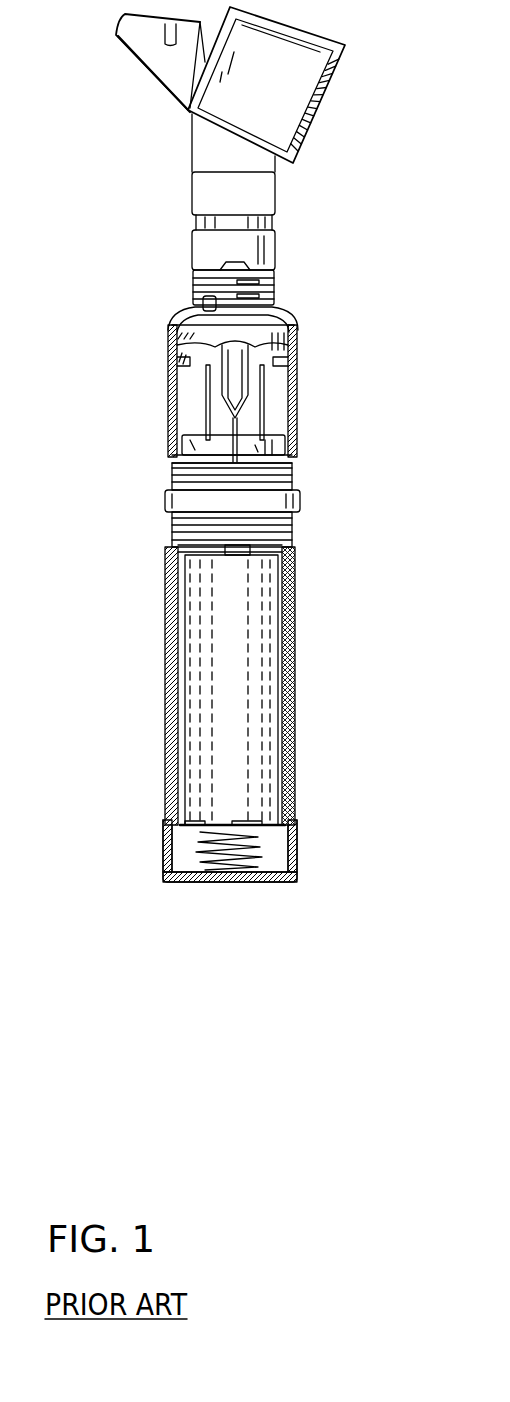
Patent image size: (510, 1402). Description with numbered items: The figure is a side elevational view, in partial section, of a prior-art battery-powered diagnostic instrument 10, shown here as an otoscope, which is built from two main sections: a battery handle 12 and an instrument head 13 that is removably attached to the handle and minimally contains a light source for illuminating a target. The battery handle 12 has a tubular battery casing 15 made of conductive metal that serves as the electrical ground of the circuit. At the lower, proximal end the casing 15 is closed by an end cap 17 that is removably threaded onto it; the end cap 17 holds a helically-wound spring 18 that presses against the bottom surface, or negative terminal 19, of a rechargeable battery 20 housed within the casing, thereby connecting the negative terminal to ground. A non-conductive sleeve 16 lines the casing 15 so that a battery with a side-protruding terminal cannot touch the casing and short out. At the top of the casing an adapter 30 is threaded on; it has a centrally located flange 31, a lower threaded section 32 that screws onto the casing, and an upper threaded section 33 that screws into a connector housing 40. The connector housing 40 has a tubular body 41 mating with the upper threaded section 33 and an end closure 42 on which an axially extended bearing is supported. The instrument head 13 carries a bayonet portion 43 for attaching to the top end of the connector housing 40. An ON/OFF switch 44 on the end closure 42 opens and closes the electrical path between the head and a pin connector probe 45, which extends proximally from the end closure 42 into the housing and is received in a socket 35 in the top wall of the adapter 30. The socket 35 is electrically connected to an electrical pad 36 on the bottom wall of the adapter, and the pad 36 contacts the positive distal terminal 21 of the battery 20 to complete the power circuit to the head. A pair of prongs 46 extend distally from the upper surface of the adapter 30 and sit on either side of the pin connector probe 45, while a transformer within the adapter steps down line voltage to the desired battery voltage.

The diagnostic instrument 10 is at (217, 277).
The battery handle 12 is at (214, 713).
The instrument head 13 is at (181, 193).
The tubular battery casing 15 is at (166, 708).
The non-conductive sleeve 16 is at (295, 689).
The end cap 17 is at (295, 858).
The helically-wound spring 18 is at (200, 848).
The negative terminal 19 is at (256, 825).
The rechargeable battery 20 is at (228, 686).
The distal terminal 21 is at (236, 557).
The adapter 30 is at (228, 500).
The flange 31 is at (165, 504).
The lower threaded section 32 is at (292, 530).
The upper threaded section 33 is at (298, 473).
The socket 35 is at (298, 434).
The electrical pad 36 is at (176, 550).
The connector housing 40 is at (245, 384).
The tubular body 41 is at (299, 410).
The end closure 42 is at (300, 340).
The bayonet portion 43 is at (277, 290).
The ON/OFF switch 44 is at (199, 300).
The pin connector probe 45 is at (186, 346).
The prongs 46 is at (206, 388).